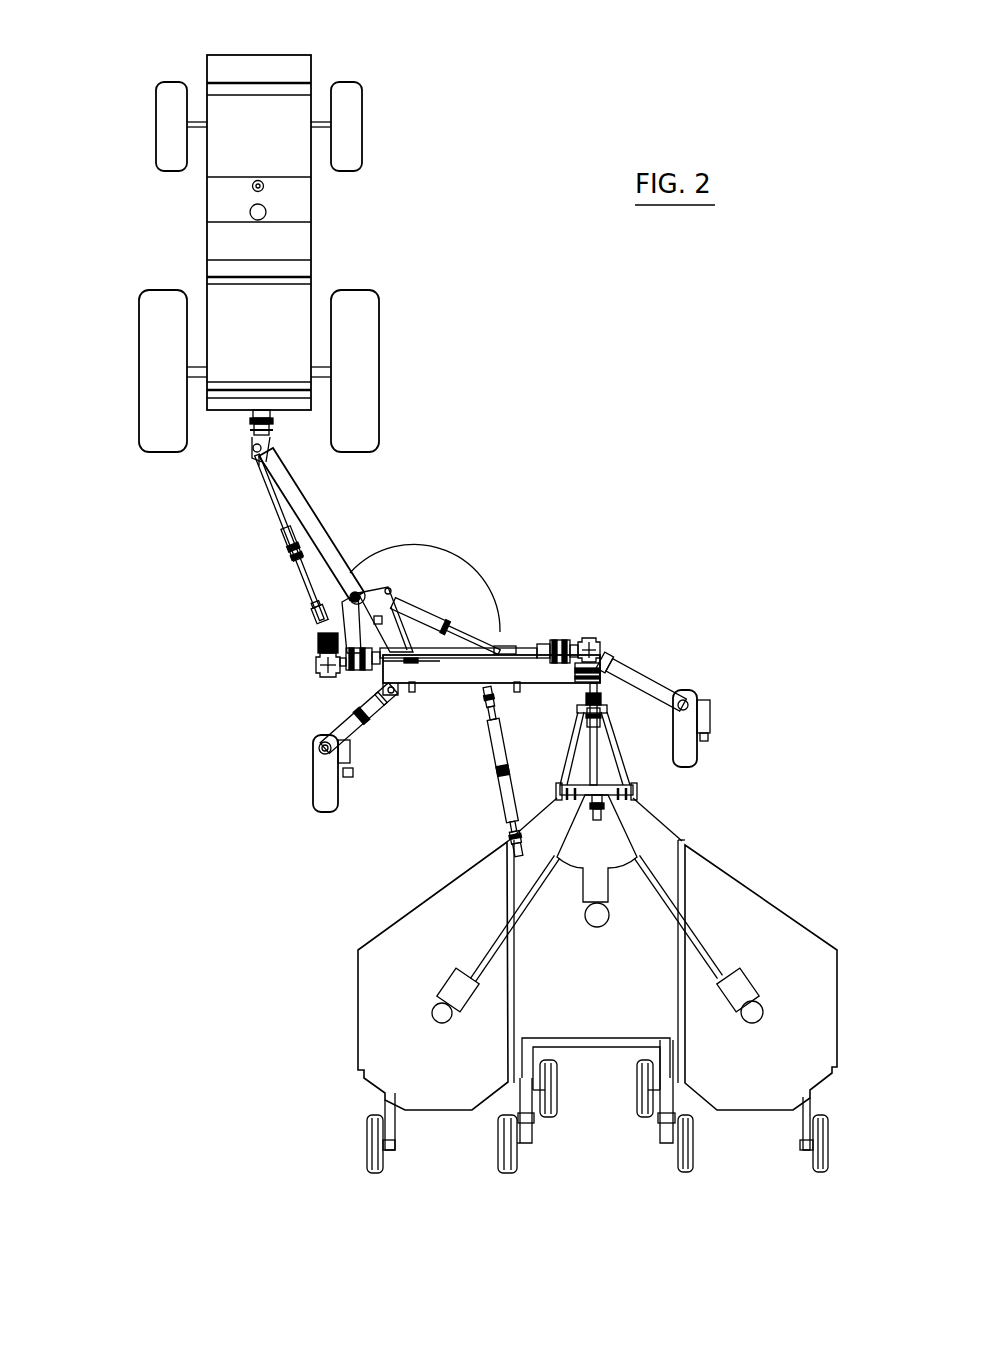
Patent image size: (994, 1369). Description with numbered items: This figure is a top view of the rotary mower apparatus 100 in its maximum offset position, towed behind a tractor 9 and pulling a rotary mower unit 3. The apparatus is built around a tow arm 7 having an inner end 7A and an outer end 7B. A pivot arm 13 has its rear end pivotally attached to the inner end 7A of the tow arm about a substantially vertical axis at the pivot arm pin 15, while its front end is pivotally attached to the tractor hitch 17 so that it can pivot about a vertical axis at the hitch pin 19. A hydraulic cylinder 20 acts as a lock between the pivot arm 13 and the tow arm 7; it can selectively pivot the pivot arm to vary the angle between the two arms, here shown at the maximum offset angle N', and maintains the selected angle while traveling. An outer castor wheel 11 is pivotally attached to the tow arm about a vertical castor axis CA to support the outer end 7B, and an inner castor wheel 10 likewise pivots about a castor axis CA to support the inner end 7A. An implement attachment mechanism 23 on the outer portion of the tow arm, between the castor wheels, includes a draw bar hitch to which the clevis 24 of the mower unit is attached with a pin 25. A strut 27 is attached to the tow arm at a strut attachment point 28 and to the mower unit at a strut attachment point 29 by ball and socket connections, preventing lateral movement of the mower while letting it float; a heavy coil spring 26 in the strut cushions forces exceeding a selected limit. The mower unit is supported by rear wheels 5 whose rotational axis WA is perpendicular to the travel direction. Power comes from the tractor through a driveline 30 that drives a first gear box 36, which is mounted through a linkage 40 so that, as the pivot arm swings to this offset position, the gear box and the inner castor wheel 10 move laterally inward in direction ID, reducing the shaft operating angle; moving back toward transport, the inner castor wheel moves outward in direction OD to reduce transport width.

The tractor 9 is at (348, 268).
The rotary mower apparatus 100 is at (558, 480).
The tractor hitch 17 is at (243, 440).
The hitch pin 19 is at (248, 462).
The pivot arm 13 is at (310, 515).
The driveline 30 is at (305, 573).
The linkage 40 is at (316, 622).
The first gear box 36 is at (316, 665).
The inner end 7A is at (378, 673).
The pivot arm pin 15 is at (398, 620).
The hydraulic cylinder 20 is at (433, 617).
The maximum offset angle N' is at (425, 588).
The tow arm 7 is at (440, 687).
The outer end 7B is at (598, 658).
The clevis 24 is at (600, 685).
The implement attachment mechanism 23 is at (644, 690).
The outer castor wheel 11 is at (690, 755).
The castor axis CA is at (697, 700).
The pin 25 is at (600, 688).
The strut 27 is at (512, 790).
The strut attachment point 28 is at (485, 707).
The heavy coil spring 26 is at (497, 773).
The strut attachment point 29 is at (513, 833).
The inner castor wheel 10 is at (307, 788).
The rotary mower unit 3 is at (631, 988).
The rear wheels 5 is at (693, 1162).
The rotational axis WA is at (828, 1143).
The inward direction ID is at (170, 685).
The outward direction OD is at (63, 723).